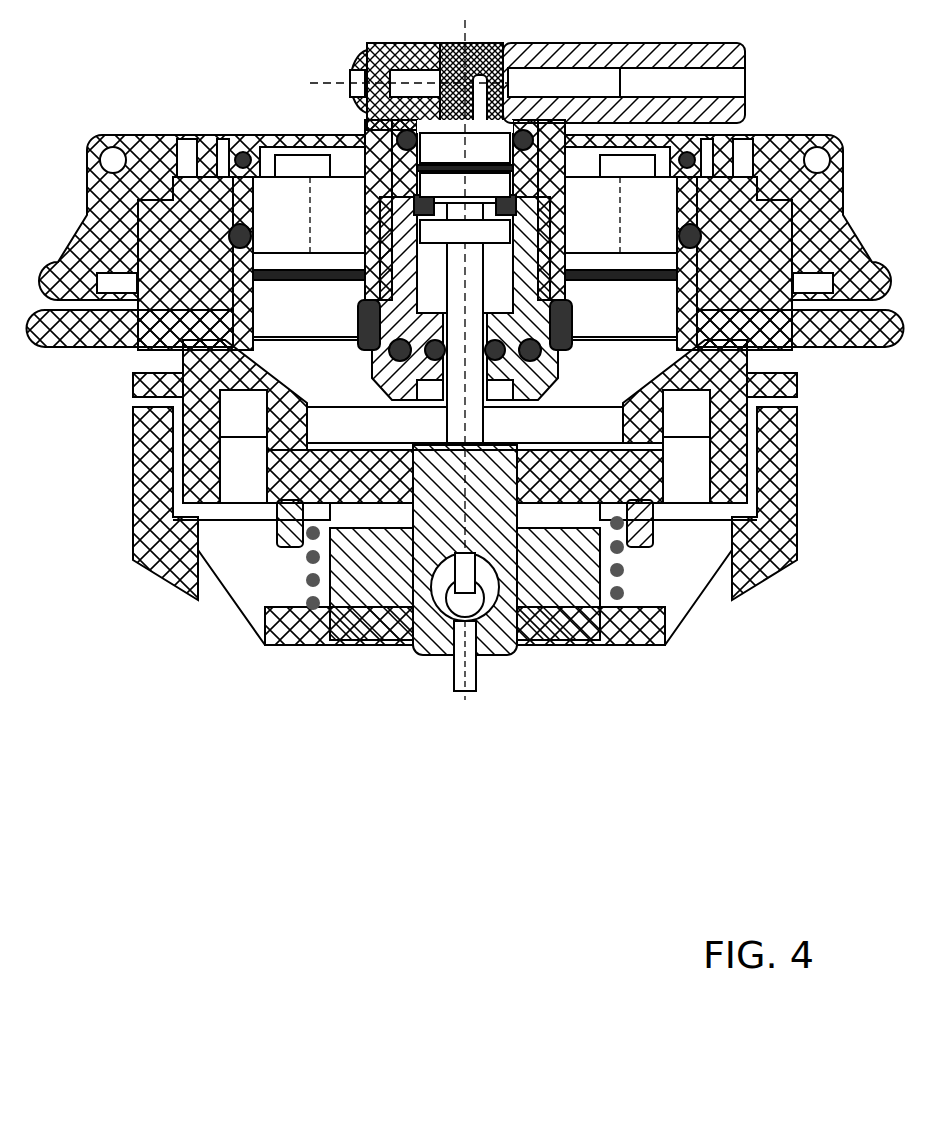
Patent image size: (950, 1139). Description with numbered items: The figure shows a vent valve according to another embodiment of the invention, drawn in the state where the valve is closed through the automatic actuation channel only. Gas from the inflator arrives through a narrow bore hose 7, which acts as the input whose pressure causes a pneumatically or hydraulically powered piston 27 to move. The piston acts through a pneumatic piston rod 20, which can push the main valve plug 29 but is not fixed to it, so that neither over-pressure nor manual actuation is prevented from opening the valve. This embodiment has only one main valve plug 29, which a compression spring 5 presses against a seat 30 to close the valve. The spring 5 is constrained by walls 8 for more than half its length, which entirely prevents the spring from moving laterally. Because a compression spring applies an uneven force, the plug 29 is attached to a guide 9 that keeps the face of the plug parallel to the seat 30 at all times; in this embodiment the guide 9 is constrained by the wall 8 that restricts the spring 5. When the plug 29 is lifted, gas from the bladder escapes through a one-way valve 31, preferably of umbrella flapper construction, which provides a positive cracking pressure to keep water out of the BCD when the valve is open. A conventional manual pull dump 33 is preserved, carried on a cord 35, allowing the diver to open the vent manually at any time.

The hose 7 is at (741, 80).
The piston 27 is at (522, 167).
The one-way valve 31 is at (662, 272).
The pneumatic piston rod 20 is at (515, 236).
The seat 30 is at (670, 432).
The valve plug 29 is at (670, 459).
The compression spring 5 is at (624, 578).
The walls 8 is at (343, 580).
The guide 9 is at (407, 603).
The cord 35 is at (492, 597).
The manual pull dump 33 is at (488, 693).